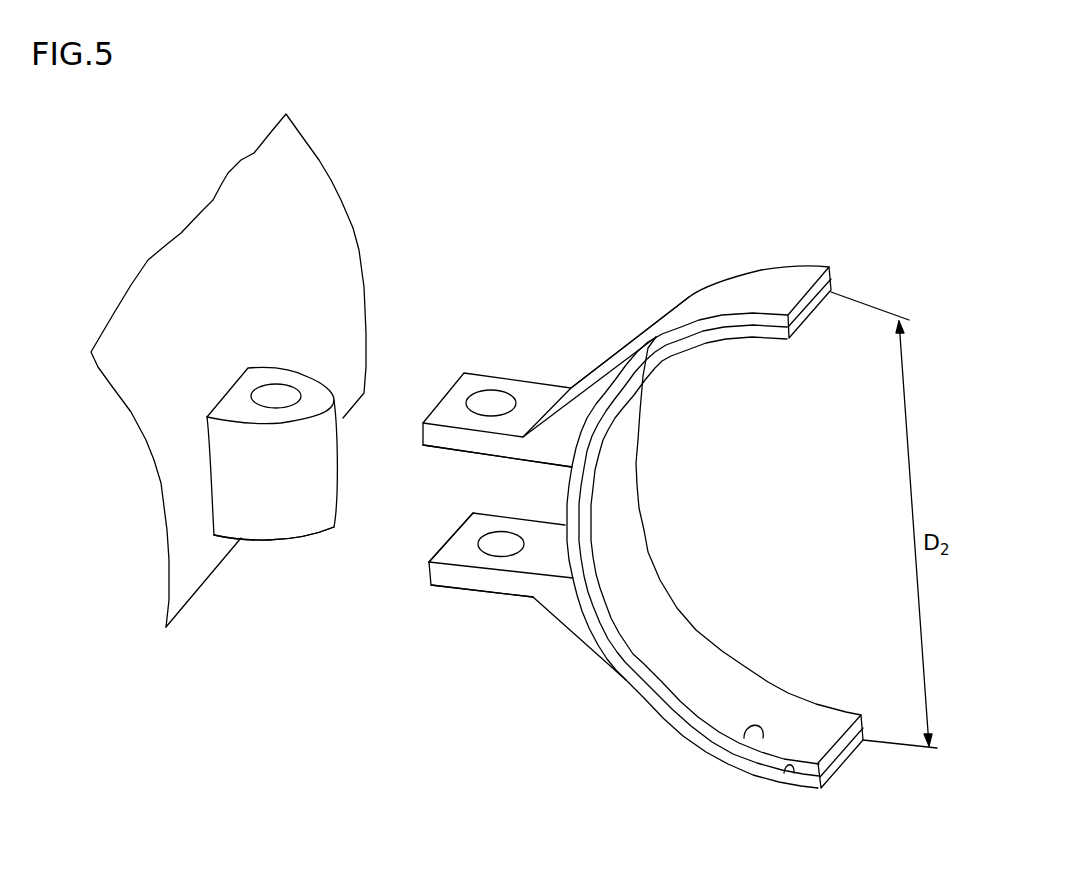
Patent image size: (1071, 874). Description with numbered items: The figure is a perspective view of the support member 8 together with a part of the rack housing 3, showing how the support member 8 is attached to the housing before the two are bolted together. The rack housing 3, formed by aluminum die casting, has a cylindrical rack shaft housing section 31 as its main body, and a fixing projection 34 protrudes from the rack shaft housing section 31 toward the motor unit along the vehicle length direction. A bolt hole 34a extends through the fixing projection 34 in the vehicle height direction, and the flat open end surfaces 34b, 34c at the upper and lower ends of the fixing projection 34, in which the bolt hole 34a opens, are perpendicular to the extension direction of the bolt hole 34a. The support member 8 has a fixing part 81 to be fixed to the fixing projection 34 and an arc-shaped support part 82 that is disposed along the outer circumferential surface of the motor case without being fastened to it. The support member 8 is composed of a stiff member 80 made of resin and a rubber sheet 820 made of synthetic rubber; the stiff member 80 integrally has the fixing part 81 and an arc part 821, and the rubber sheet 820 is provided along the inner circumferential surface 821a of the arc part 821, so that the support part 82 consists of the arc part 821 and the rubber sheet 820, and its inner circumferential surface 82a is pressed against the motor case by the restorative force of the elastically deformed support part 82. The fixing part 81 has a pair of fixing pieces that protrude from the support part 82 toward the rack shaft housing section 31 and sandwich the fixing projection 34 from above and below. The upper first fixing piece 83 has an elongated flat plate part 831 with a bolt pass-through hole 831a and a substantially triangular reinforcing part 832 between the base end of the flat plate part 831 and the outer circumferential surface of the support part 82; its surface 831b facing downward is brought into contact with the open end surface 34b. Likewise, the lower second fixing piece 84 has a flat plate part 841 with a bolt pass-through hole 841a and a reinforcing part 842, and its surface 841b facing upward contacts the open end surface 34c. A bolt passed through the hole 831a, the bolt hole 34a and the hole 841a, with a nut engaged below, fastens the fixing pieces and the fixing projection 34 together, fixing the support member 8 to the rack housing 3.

The rack housing 3 is at (352, 182).
The rack shaft housing section 31 is at (183, 583).
The fixing projection 34 is at (301, 443).
The bolt hole 34a is at (282, 393).
The open end surface 34b is at (257, 377).
The open end surface 34c is at (272, 543).
The support member 8 is at (437, 325).
The stiff member 80 is at (650, 320).
The fixing part 81 is at (437, 595).
The support part 82 is at (757, 290).
The inner circumferential surface 82a is at (757, 737).
The rubber sheet 820 is at (757, 335).
The arc part 821 is at (797, 272).
The inner circumferential surface 821a is at (793, 777).
The first fixing piece 83 is at (495, 322).
The flat plate part 831 is at (522, 393).
The bolt pass-through hole 831a is at (472, 402).
The surface 831b is at (492, 458).
The reinforcing part 832 is at (582, 383).
The second fixing piece 84 is at (453, 652).
The flat plate part 841 is at (486, 580).
The bolt pass-through hole 841a is at (477, 540).
The surface 841b is at (497, 523).
The reinforcing part 842 is at (560, 602).